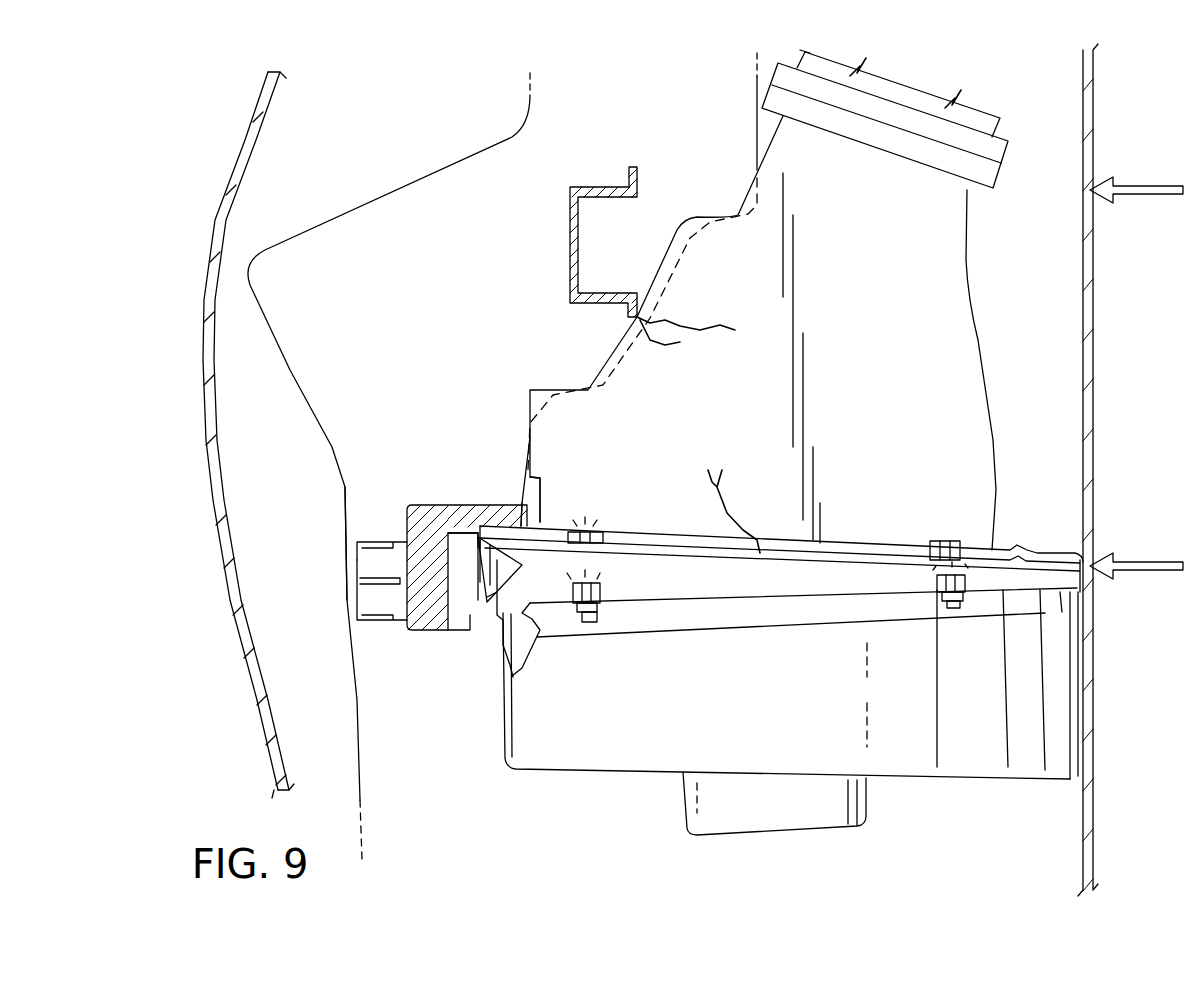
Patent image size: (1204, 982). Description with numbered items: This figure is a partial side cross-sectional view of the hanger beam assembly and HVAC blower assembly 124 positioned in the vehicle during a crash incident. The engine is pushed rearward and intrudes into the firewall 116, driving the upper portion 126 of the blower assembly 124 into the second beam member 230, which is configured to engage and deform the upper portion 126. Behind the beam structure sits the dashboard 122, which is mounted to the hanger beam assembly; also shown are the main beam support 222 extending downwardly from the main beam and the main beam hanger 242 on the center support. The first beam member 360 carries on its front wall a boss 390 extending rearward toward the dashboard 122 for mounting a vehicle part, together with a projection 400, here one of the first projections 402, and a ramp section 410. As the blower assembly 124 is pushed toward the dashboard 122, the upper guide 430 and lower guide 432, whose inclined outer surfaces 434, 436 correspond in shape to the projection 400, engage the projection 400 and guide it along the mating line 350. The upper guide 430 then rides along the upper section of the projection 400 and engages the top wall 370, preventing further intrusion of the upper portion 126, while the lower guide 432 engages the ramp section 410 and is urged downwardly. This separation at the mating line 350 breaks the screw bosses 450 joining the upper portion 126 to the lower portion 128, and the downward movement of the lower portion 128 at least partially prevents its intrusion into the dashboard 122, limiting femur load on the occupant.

The firewall 116 is at (1093, 356).
The dashboard 122 is at (222, 553).
The blower assembly 124 is at (990, 348).
The upper portion 126 is at (960, 290).
The lower portion 128 is at (925, 753).
The main beam support 222 is at (440, 803).
The second beam member 230 is at (568, 236).
The main beam hanger 242 is at (352, 230).
The mating line 350 is at (770, 588).
The first beam member 360 is at (415, 497).
The top wall 370 is at (468, 520).
The boss 390 is at (363, 603).
The projection 400 is at (445, 612).
The first projection 402 is at (462, 567).
The ramp section 410 is at (505, 592).
The upper guide 430 is at (500, 508).
The lower guide 432 is at (490, 620).
The outer surface 434 is at (462, 527).
The outer surface 436 is at (383, 570).
The screw bosses 450 is at (600, 593).